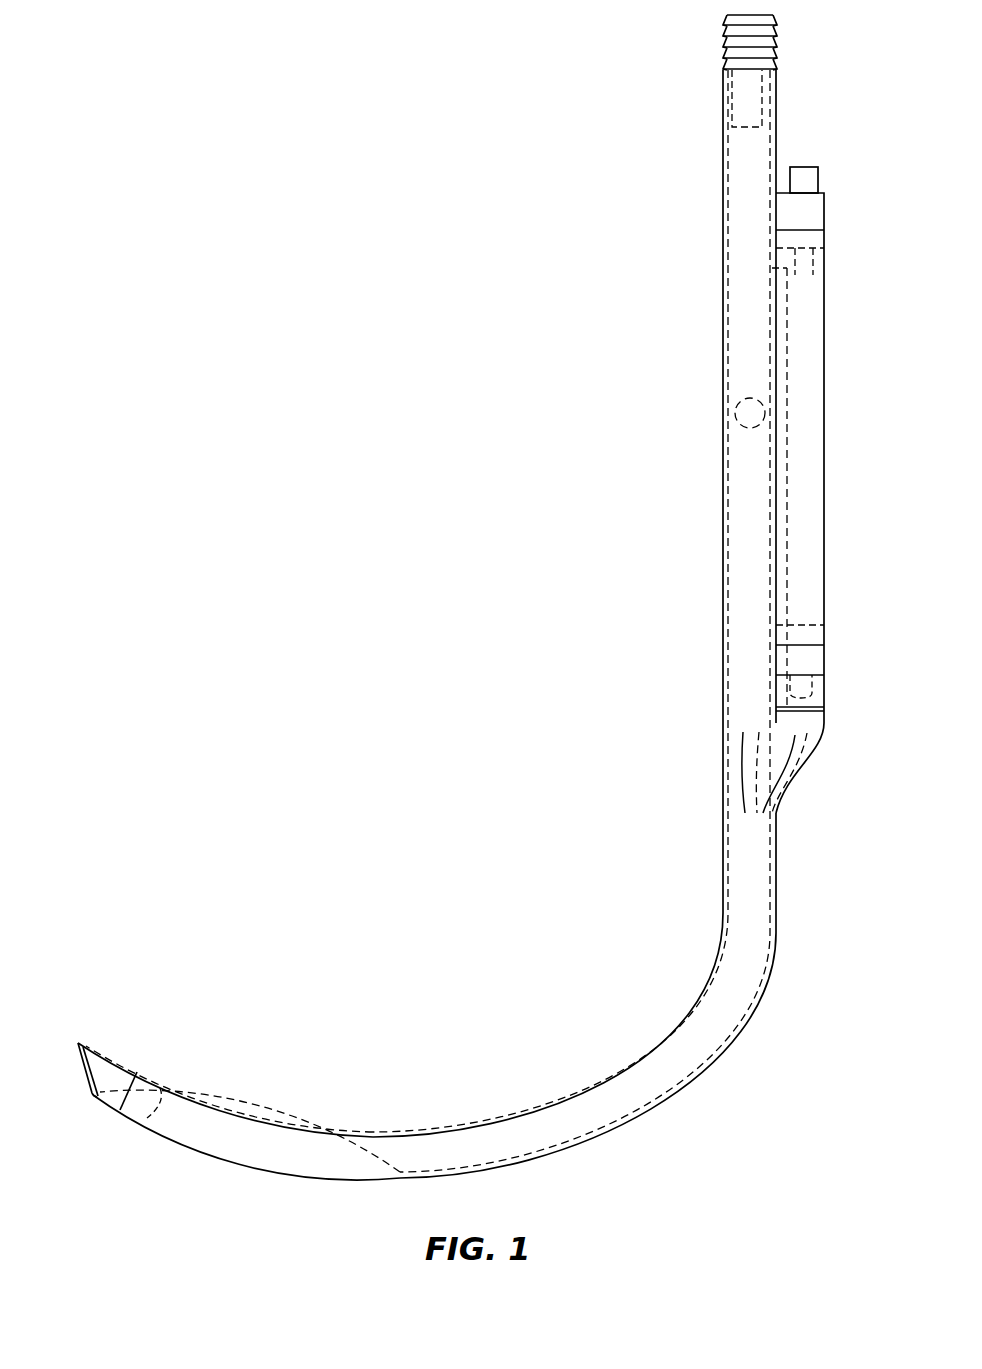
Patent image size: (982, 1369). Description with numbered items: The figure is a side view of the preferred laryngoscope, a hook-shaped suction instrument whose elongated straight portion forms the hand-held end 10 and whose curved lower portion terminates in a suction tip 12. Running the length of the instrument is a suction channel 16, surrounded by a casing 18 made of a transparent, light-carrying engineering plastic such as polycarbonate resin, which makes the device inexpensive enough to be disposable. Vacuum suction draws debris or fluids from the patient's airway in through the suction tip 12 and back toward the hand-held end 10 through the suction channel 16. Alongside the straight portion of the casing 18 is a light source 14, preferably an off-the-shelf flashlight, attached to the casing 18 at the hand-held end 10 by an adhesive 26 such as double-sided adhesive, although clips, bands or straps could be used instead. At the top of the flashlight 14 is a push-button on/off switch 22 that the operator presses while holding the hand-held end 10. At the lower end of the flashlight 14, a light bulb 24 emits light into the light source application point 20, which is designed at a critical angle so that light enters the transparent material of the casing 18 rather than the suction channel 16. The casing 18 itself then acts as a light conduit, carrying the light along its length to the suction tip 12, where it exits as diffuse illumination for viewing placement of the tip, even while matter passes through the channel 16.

The hand-held end 10 is at (558, 134).
The suction tip 12 is at (107, 1052).
The light source 14 is at (824, 299).
The suction channel 16 is at (495, 1143).
The casing 18 is at (721, 910).
The light source application point 20 is at (788, 757).
The push-button on/off switch 22 is at (807, 167).
The light bulb 24 is at (803, 695).
The adhesive 26 is at (778, 473).